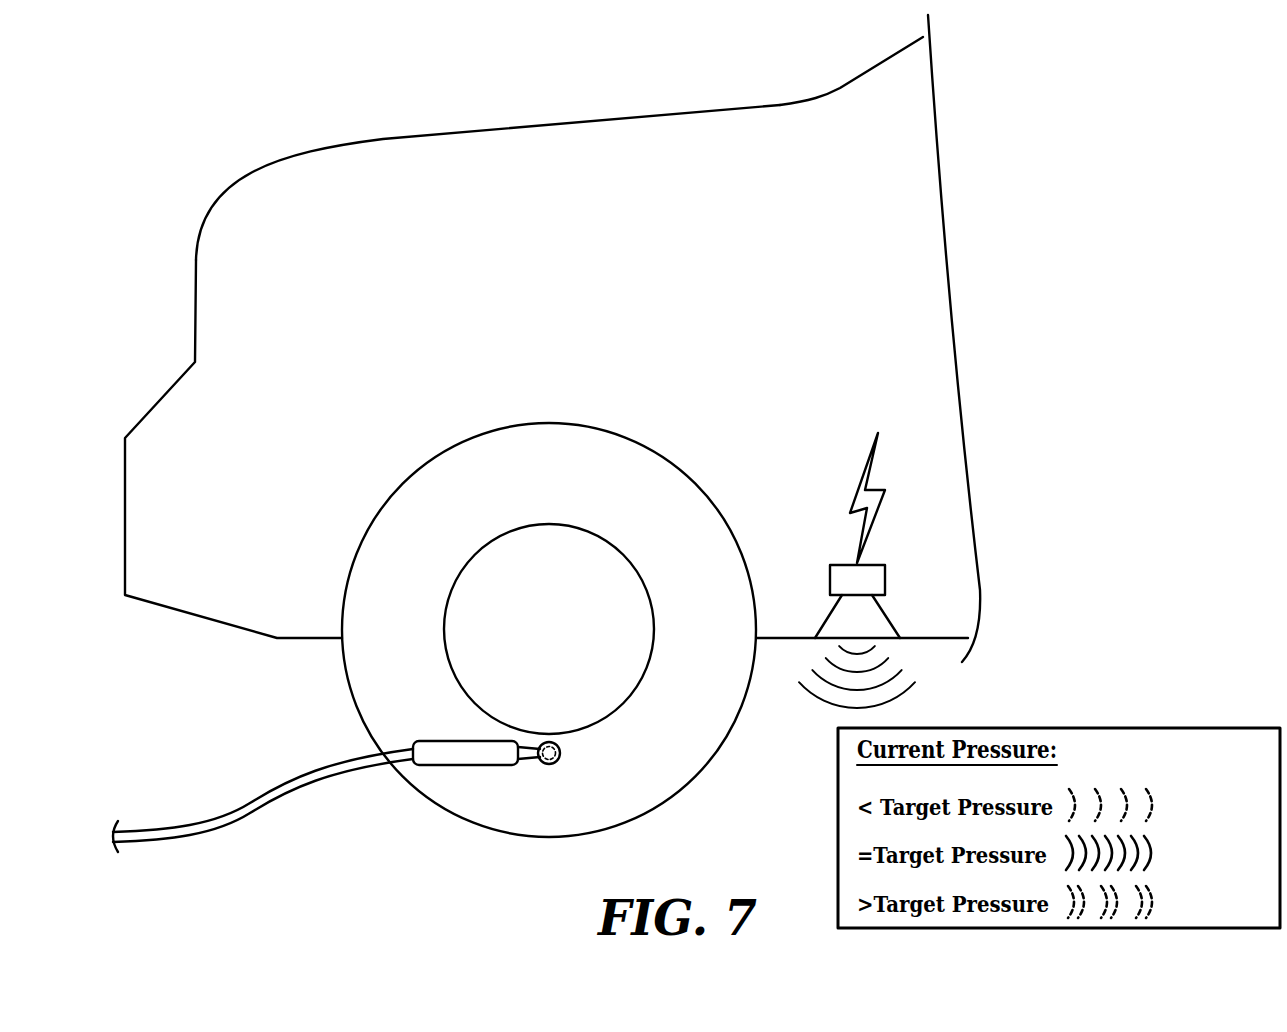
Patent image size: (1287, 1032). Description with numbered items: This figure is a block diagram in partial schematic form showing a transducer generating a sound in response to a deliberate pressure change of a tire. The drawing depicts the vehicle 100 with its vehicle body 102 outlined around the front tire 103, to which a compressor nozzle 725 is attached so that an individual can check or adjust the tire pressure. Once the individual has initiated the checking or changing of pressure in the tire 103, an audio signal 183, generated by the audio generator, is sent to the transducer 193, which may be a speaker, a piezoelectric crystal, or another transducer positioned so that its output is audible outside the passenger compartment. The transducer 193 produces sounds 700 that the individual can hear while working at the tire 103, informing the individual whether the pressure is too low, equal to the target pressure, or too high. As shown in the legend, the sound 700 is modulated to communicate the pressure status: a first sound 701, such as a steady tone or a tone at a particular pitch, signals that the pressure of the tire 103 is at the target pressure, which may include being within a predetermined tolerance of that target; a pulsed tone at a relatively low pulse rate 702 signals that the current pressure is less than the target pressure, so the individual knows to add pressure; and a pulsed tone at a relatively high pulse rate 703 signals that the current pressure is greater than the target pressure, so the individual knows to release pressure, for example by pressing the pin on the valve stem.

The vehicle 100 is at (517, 338).
The vehicle body 102 is at (383, 139).
The front tire 103 is at (716, 750).
The audio signal 183 is at (857, 498).
The transducer 193 is at (837, 620).
The sound 700 is at (917, 665).
The first sound 701 is at (1181, 851).
The pulsed tone at a relatively low pulse rate 702 is at (1181, 803).
The pulsed tone at a relatively high pulse rate 703 is at (1181, 900).
The compressor nozzle 725 is at (462, 757).